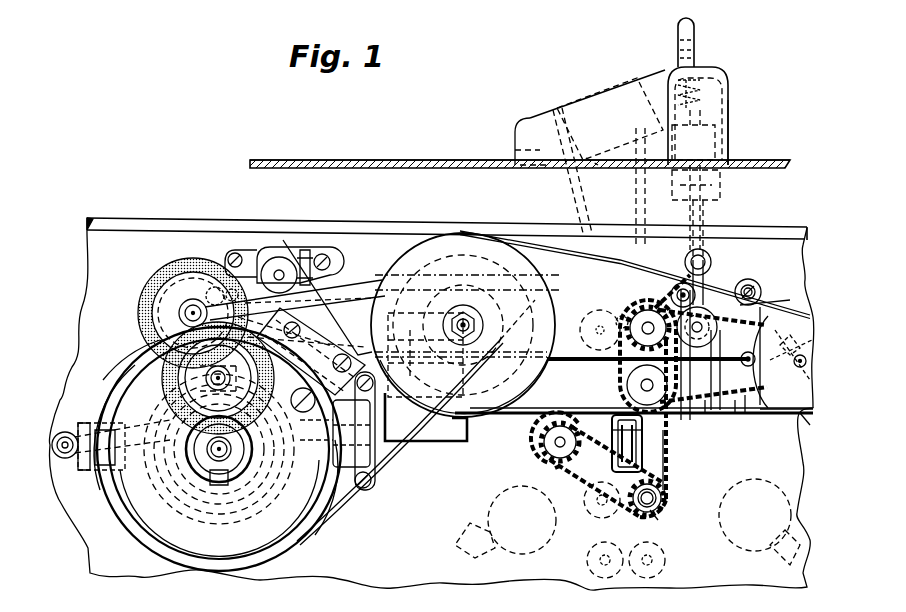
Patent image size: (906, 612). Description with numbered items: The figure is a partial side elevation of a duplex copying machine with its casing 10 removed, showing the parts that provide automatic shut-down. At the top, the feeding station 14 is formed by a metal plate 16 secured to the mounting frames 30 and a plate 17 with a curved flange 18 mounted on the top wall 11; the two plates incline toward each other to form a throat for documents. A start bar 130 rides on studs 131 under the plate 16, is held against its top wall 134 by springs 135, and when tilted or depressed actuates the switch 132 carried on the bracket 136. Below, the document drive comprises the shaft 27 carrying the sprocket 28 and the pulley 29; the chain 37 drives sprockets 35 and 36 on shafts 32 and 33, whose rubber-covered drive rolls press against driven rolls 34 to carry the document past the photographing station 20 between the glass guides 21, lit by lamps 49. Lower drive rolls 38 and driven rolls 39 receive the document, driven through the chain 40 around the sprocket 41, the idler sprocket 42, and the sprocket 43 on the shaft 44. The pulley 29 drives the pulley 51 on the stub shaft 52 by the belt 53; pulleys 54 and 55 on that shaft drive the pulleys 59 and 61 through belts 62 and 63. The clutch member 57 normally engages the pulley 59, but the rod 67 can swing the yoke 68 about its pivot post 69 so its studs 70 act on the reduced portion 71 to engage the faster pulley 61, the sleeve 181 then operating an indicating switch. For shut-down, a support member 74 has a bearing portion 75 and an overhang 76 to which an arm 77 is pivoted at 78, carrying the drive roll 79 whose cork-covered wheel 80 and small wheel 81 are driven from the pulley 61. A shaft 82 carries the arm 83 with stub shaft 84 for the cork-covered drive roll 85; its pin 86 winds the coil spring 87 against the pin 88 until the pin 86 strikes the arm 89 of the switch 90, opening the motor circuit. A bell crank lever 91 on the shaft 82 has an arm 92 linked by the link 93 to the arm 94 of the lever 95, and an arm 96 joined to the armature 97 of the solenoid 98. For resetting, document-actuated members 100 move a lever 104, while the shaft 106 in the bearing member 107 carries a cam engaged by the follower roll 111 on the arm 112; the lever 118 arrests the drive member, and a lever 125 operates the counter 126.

The casing 10 is at (331, 159).
The top wall 11 is at (461, 160).
The feeding station 14 is at (577, 95).
The formed metal plate 16 is at (730, 115).
The plate 17 is at (560, 180).
The curved flange 18 is at (526, 120).
The photographing station 20 is at (648, 455).
The glass guides 21 is at (636, 443).
The shaft 27 is at (772, 416).
The sprocket 28 is at (748, 366).
The pulley 29 is at (802, 418).
The mounting frames 30 is at (87, 243).
The shaft 32 is at (648, 318).
The shaft 33 is at (588, 432).
The driven rolls 34 is at (620, 318).
The sprocket 35 is at (622, 314).
The sprocket 36 is at (590, 336).
The chain 37 is at (750, 415).
The drive rolls 38 is at (668, 498).
The driven rolls 39 is at (590, 508).
The chain 40 is at (669, 474).
The sprocket 41 is at (669, 416).
The idler sprocket 42 is at (570, 470).
The sprocket 43 is at (650, 512).
The shaft 44 is at (656, 506).
The lamps 49 is at (512, 535).
The pulley 51 is at (490, 405).
The stub shaft 52 is at (478, 322).
The belt 53 is at (506, 418).
The pulley 54 is at (532, 308).
The pulley 55 is at (470, 270).
The clutch member 57 is at (176, 488).
The pulley 59 is at (157, 556).
The pulley 61 is at (205, 568).
The belt 62 is at (318, 530).
The belt 63 is at (405, 470).
The rod 67 is at (57, 434).
The yoke 68 is at (275, 490).
The pivot post 69 is at (367, 488).
The studs 70 is at (212, 485).
The reduced portion 71 is at (250, 500).
The support member 74 is at (254, 252).
The bearing portion 75 is at (288, 258).
The overhang 76 is at (332, 335).
The arm 77 is at (298, 410).
The pivot 78 is at (335, 450).
The drive roll 79 is at (170, 398).
The cork-covered wheel 80 is at (168, 380).
The small wheel 81 is at (178, 428).
The shaft 82 is at (332, 264).
The arm 83 is at (245, 258).
The stub shaft 84 is at (184, 305).
The cork-covered drive roll 85 is at (146, 300).
The pin 86 is at (213, 287).
The coil spring 87 is at (180, 270).
The pin 88 is at (298, 268).
The arm 89 is at (130, 374).
The switch 90 is at (302, 323).
The bell crank lever 91 is at (378, 278).
The arm 92 is at (348, 384).
The link 93 is at (540, 368).
The arm 94 is at (775, 320).
The lever 95 is at (756, 286).
The arm 96 is at (295, 304).
The armature 97 is at (425, 340).
The solenoid 98 is at (435, 442).
The document-actuated members 100 is at (702, 362).
The lever 104 is at (720, 404).
The shaft 106 is at (720, 268).
The bearing member 107 is at (706, 250).
The follower roll 111 is at (676, 285).
The arm 112 is at (748, 279).
The lever 118 is at (765, 296).
The lever 125 is at (708, 212).
The counter 126 is at (610, 100).
The start bar 130 is at (696, 32).
The studs 131 is at (705, 95).
The switch 132 is at (722, 140).
The top wall 134 is at (705, 70).
The springs 135 is at (724, 80).
The bracket 136 is at (722, 192).
The sleeve 181 is at (60, 462).